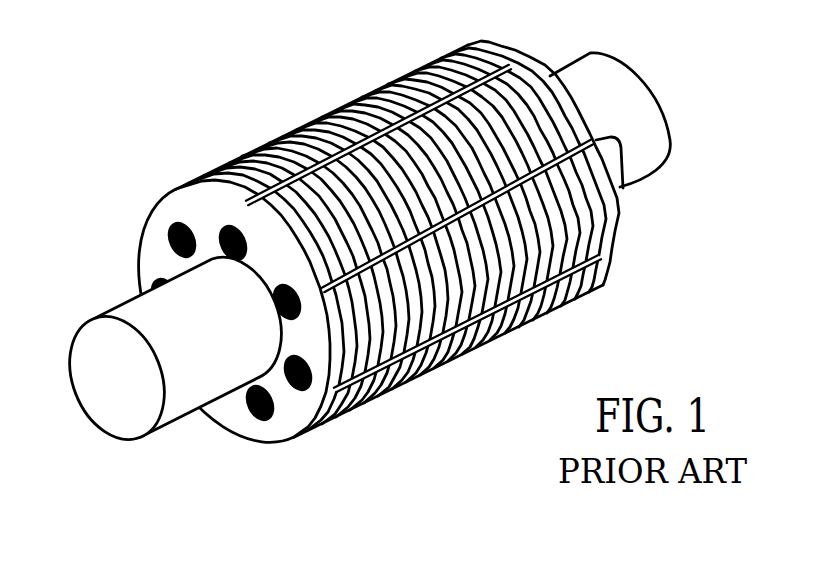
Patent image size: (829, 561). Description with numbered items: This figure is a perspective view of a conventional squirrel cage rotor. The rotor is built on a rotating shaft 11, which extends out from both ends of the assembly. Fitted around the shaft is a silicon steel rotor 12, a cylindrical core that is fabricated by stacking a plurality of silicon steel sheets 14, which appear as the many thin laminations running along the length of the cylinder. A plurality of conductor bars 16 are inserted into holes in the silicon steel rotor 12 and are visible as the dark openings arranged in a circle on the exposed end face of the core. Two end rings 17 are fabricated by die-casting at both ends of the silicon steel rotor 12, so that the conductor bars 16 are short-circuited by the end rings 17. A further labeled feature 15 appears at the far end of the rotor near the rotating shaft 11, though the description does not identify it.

The rotating shaft 11 is at (648, 116).
The silicon steel rotor 12 is at (334, 113).
The silicon steel sheets 14 is at (377, 390).
The end ring 15 is at (622, 186).
The conductor bars 16 is at (266, 420).
The end rings 17 is at (143, 265).